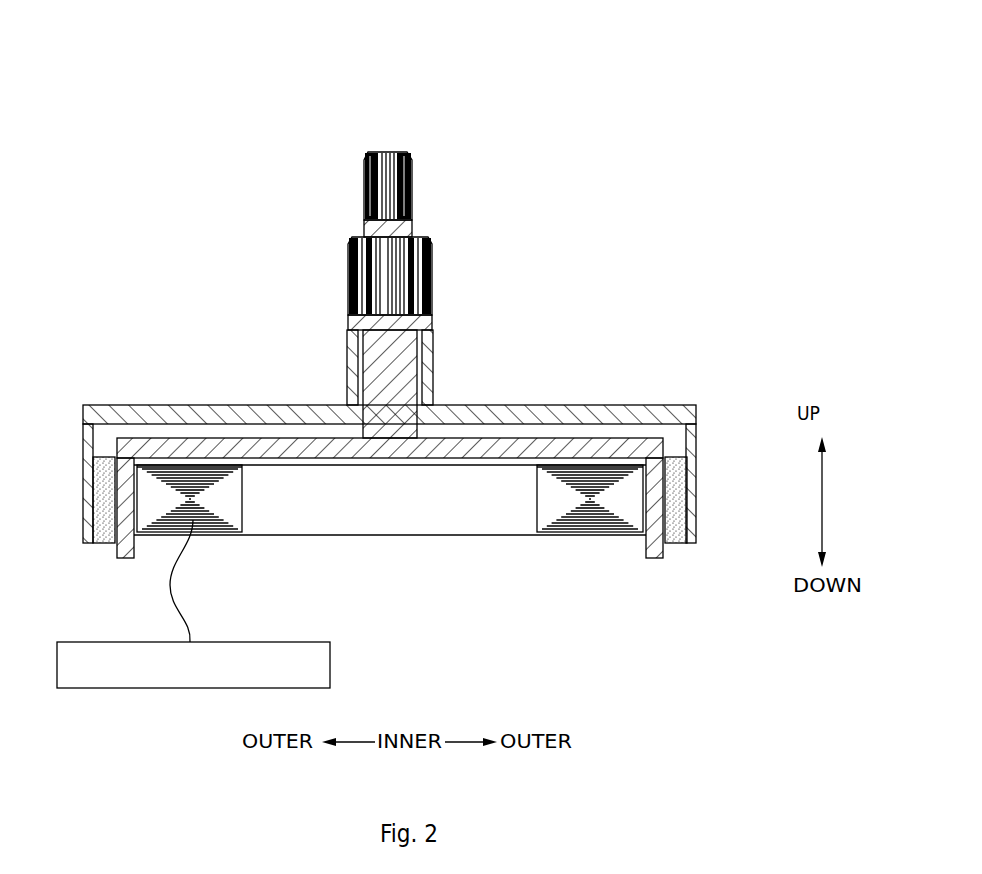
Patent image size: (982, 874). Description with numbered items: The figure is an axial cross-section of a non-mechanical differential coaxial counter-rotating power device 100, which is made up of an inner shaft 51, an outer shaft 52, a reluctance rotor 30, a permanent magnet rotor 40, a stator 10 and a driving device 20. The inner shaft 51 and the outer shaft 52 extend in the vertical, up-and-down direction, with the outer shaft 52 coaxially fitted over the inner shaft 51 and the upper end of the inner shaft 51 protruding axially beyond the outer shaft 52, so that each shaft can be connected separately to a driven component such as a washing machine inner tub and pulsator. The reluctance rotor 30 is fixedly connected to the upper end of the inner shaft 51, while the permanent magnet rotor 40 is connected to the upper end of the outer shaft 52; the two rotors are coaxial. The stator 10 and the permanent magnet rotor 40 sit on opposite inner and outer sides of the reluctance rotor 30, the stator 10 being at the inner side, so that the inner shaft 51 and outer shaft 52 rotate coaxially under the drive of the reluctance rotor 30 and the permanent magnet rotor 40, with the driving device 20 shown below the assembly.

The non-mechanical differential coaxial counter-rotating power device 100 is at (370, 48).
The stator 10 is at (390, 513).
The driving device 20 is at (302, 673).
The reluctance rotor 30 is at (538, 440).
The permanent magnet rotor 40 is at (697, 407).
The inner shaft 51 is at (408, 153).
The outer shaft 52 is at (432, 267).